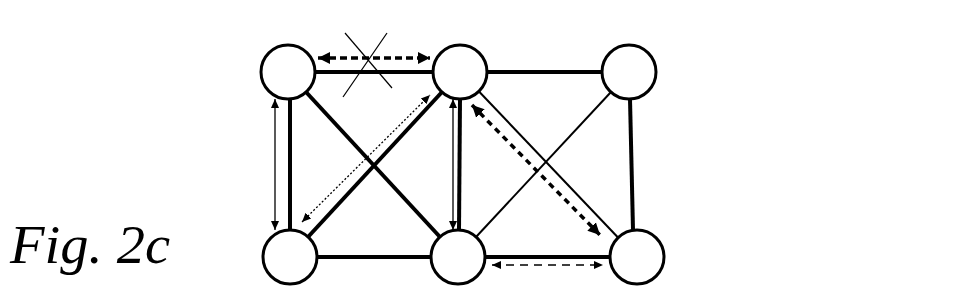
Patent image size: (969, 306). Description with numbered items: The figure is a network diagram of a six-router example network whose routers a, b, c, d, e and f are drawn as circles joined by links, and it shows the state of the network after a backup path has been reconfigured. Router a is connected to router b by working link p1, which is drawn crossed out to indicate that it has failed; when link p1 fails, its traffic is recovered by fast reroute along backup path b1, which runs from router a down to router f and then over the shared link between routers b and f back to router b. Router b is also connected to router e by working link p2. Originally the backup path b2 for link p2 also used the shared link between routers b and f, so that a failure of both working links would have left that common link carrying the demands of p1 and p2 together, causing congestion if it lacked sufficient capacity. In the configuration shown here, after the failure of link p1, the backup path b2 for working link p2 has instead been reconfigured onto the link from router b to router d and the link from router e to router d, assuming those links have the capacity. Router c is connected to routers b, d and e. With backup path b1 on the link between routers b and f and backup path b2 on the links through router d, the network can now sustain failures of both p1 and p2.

The router a is at (288, 72).
The router b is at (460, 72).
The router c is at (629, 72).
The router d is at (637, 257).
The router e is at (458, 257).
The router f is at (290, 257).
The working link p1 is at (374, 53).
The working link p2 is at (438, 164).
The backup path b1 is at (337, 162).
The backup path b2 is at (537, 204).